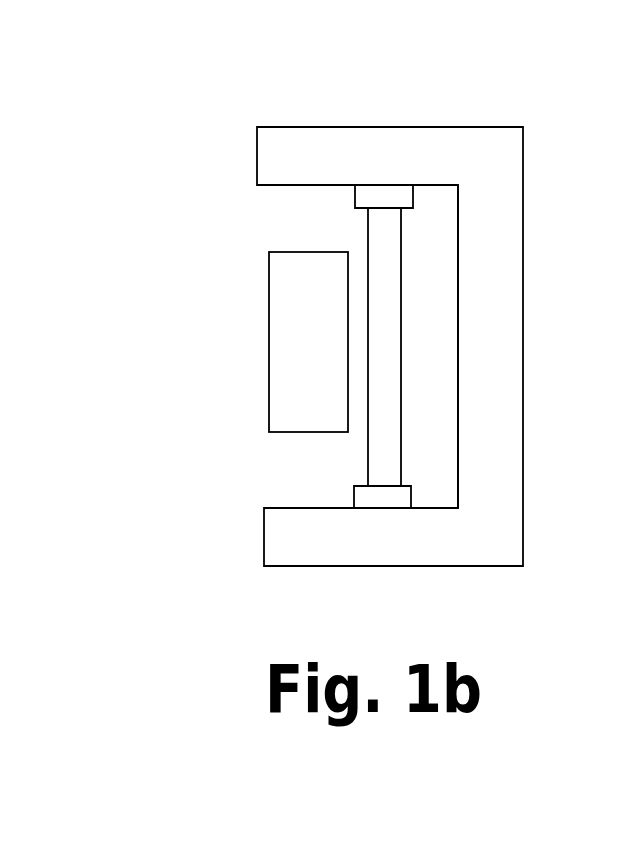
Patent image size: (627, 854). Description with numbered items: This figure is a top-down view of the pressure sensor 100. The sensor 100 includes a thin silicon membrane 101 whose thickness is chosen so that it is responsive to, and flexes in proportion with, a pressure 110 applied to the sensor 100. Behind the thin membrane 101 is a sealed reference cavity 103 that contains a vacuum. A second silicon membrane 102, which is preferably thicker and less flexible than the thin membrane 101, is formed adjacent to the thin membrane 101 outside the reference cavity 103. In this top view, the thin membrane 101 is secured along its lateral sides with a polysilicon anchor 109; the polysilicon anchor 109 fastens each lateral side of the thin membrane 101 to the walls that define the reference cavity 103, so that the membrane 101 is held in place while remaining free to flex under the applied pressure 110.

The pressure sensor 100 is at (298, 98).
The pressure 110 is at (248, 215).
The reference cavity 103 is at (428, 312).
The second silicon membrane 102 is at (305, 372).
The thin silicon membrane 101 is at (385, 430).
The polysilicon anchor 109 is at (388, 502).